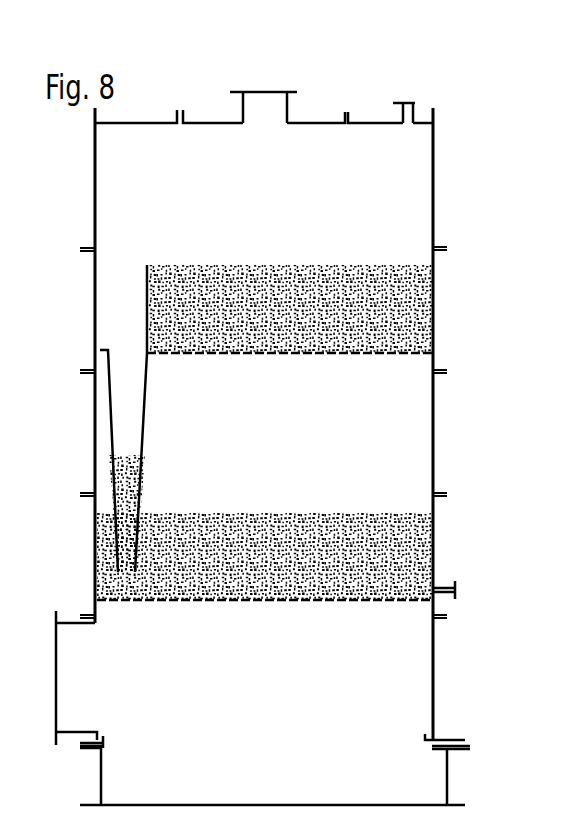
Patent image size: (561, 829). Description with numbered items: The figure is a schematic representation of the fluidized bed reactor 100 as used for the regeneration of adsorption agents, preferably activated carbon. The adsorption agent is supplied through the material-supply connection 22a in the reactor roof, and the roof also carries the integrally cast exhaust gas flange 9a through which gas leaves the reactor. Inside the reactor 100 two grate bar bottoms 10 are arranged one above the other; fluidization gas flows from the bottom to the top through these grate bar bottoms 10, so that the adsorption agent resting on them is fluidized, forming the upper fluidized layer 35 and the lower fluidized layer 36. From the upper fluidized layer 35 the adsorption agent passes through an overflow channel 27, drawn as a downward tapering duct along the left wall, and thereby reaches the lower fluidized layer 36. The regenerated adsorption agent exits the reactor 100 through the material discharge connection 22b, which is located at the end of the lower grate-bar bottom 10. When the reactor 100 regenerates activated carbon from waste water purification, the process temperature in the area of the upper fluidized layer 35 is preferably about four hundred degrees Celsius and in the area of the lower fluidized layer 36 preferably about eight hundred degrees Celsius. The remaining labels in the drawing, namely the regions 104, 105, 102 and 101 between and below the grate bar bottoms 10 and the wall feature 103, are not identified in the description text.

The fluidized bed reactor 100 is at (450, 181).
The upper chamber 104 is at (278, 183).
The middle chamber 105 is at (275, 437).
The lower chamber 102 is at (271, 672).
The bottom chamber 101 is at (263, 789).
The exhaust gas flange 9a is at (248, 110).
The material-supply connection 22a is at (402, 113).
The material discharge connection 22b is at (447, 586).
The support flange 103 is at (143, 257).
The upper fluidized layer 35 is at (418, 288).
The lower fluidized layer 36 is at (418, 540).
The grate bar bottoms 10 is at (398, 352).
The overflow channel 27 is at (120, 437).